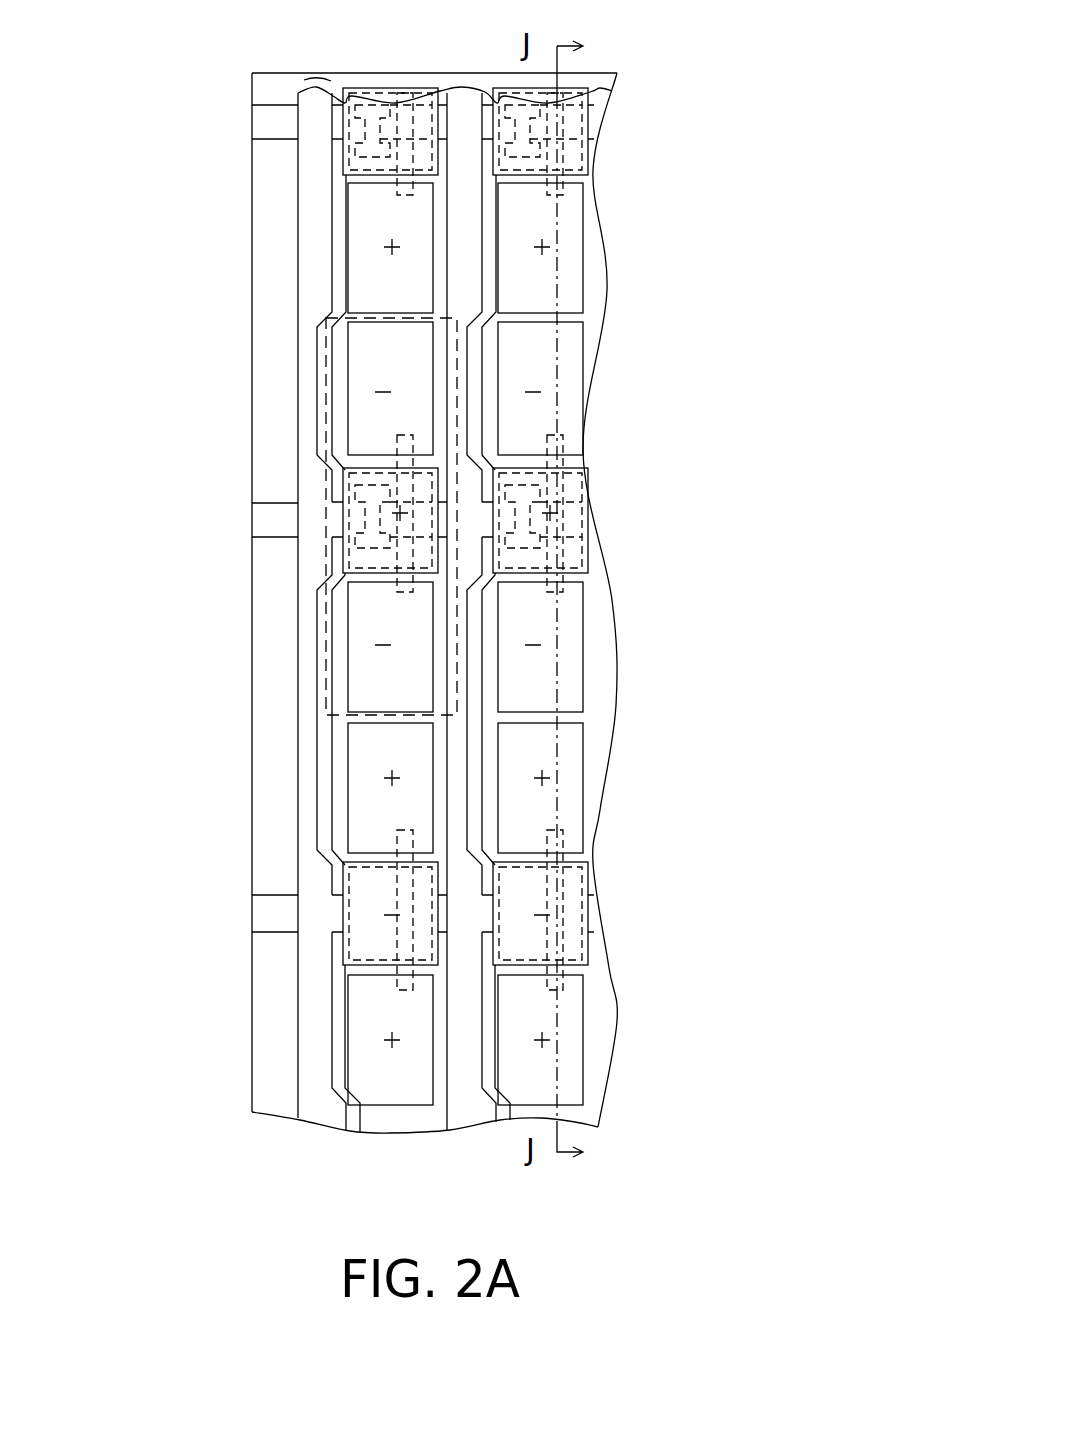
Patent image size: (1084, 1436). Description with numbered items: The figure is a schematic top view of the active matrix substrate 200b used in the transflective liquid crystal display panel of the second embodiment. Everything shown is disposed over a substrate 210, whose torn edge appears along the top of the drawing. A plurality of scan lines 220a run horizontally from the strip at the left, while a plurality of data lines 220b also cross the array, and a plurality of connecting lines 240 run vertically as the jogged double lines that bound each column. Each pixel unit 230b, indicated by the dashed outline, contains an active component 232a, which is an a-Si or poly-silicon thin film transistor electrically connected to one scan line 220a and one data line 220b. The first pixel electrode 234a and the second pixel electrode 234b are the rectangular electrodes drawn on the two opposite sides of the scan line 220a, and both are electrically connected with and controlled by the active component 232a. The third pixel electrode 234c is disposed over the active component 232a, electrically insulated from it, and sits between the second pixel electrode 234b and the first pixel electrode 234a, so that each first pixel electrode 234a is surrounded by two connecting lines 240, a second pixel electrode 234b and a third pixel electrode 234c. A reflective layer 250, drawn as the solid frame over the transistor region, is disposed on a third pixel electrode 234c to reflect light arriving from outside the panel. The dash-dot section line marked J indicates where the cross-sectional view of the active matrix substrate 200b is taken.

The active matrix substrate 200b is at (768, 1160).
The substrate 210 is at (378, 76).
The scan line 220a is at (262, 116).
The data line 220b is at (321, 100).
The pixel unit 230b is at (326, 337).
The active component 232a is at (540, 493).
The first pixel electrode 234a is at (355, 397).
The second pixel electrode 234b is at (355, 620).
The third pixel electrode 234c is at (352, 556).
The connecting line 240 is at (323, 773).
The reflective layer 250 is at (588, 132).